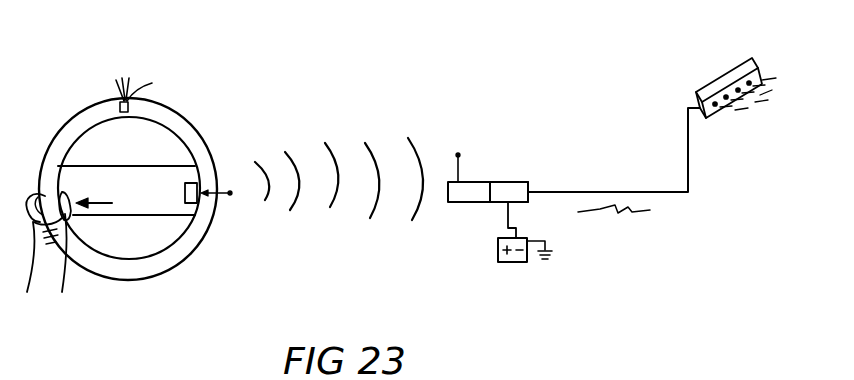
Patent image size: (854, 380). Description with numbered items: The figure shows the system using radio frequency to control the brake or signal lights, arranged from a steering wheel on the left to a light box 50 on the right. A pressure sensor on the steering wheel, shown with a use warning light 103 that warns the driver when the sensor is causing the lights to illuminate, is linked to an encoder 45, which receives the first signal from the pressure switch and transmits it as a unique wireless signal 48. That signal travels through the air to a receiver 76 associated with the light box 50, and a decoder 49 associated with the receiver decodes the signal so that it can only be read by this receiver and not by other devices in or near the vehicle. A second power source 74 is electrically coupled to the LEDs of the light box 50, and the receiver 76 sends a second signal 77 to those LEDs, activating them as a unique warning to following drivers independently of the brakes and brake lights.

The use warning light 103 is at (121, 171).
The encoder 45 is at (196, 183).
The unique wireless signal 48 is at (330, 192).
The receiver 76 is at (465, 190).
The decoder 49 is at (508, 190).
The second power source 74 is at (512, 263).
The second signal 77 is at (622, 217).
The light box 50 is at (725, 78).